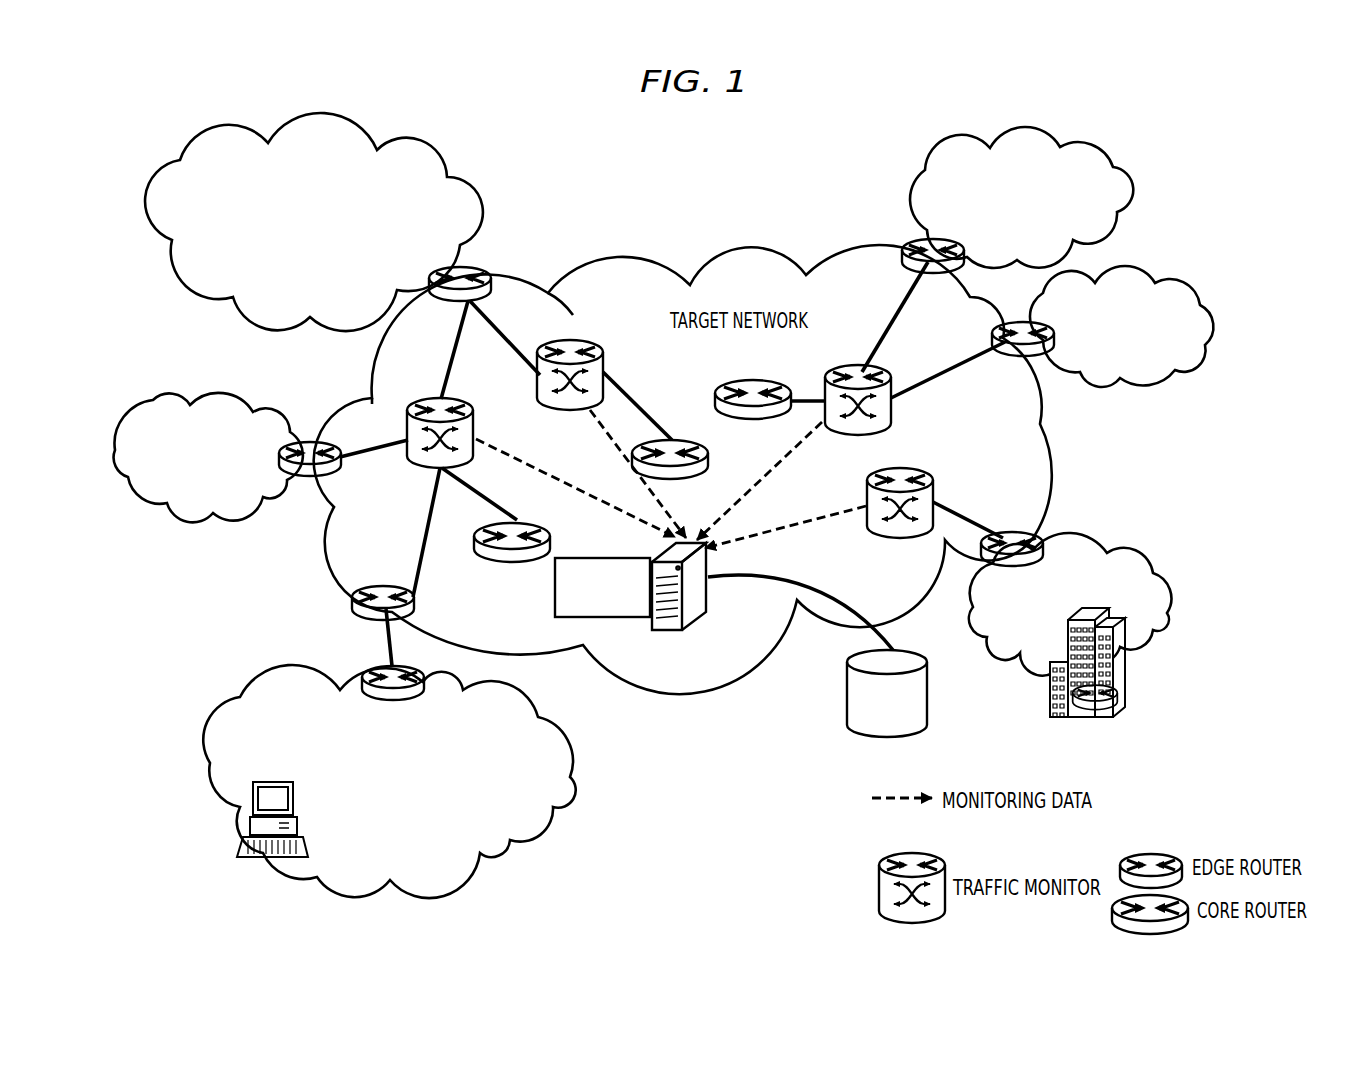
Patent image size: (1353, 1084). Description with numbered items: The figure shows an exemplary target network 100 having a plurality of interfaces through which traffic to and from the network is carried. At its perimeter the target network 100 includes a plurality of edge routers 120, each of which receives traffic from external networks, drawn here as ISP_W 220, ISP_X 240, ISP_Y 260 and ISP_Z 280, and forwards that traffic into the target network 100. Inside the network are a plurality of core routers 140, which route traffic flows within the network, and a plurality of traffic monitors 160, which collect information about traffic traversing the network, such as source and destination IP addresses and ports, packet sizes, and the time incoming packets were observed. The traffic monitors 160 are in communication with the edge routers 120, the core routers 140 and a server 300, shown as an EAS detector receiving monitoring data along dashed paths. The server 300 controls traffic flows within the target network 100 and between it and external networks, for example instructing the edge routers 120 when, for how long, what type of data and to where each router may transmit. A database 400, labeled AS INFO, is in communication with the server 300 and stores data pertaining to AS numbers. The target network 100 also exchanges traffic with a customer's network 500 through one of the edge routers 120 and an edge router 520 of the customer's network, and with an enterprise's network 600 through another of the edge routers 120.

The target network 100 is at (776, 212).
The edge routers 120 is at (483, 272).
The core routers 140 is at (742, 380).
The traffic monitors 160 is at (577, 340).
The ISP_W 220 is at (1133, 188).
The ISP_X 240 is at (156, 399).
The ISP_Y 260 is at (1213, 318).
The ISP_Z 280 is at (158, 180).
The server 300 is at (695, 626).
The database 400 is at (928, 687).
The customer's network 500 is at (210, 760).
The edge router of the customer's network 520 is at (368, 670).
The enterprise's network 600 is at (1178, 599).